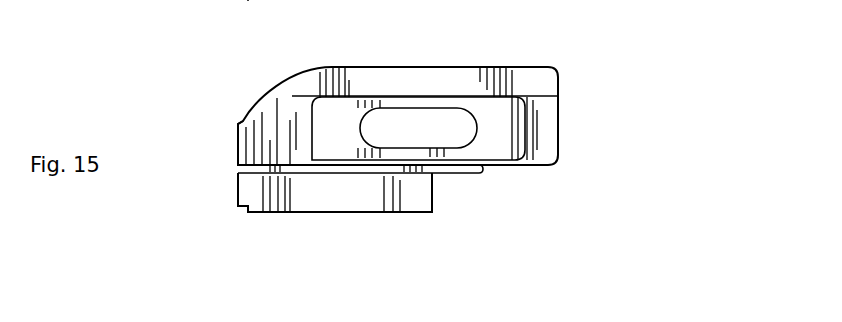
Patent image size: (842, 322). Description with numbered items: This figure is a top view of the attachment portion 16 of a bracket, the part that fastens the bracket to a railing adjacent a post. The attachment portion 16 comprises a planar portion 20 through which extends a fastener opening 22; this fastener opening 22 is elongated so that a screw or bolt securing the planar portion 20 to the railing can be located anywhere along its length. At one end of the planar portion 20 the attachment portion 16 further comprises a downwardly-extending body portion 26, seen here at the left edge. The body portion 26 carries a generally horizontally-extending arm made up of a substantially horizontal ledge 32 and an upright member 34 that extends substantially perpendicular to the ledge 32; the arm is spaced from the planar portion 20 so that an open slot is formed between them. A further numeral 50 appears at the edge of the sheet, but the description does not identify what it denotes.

The attachment portion 16 is at (635, 83).
The planar portion 20 is at (540, 130).
The fastener opening 22 is at (440, 127).
The body portion 26 is at (230, 144).
The ledge 32 is at (327, 197).
The upright member 34 is at (452, 170).
The tool 50 is at (247, 0).